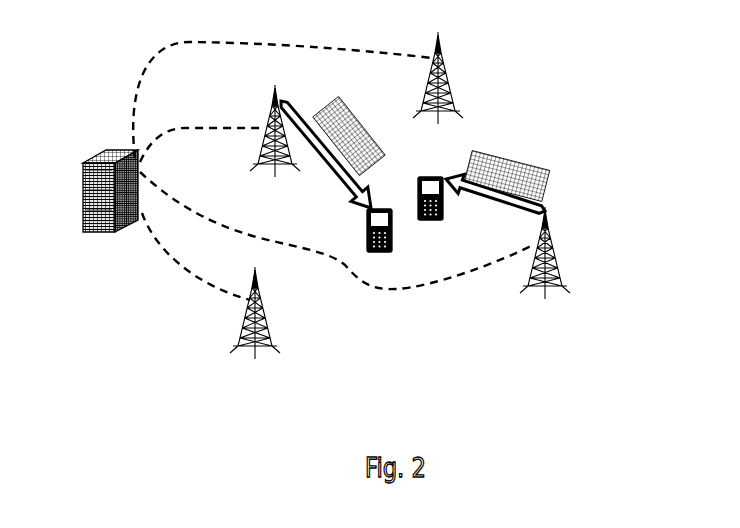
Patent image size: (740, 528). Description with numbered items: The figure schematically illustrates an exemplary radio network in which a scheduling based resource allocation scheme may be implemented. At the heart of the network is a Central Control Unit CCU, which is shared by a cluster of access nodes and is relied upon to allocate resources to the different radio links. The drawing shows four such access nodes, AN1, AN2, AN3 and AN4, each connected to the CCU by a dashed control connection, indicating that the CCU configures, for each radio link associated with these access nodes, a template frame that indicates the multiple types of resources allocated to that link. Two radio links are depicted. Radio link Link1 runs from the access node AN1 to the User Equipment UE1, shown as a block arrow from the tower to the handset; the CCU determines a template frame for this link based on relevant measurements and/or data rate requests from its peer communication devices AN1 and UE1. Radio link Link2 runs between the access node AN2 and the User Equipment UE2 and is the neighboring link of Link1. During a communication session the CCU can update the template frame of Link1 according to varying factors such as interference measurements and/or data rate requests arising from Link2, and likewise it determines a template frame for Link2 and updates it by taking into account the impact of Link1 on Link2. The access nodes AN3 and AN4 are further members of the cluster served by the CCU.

The Central Control Unit CCU is at (109, 181).
The access node 1 AN1 is at (265, 130).
The access node 2 AN2 is at (567, 253).
The access node 3 AN3 is at (448, 78).
The access node 4 AN4 is at (269, 313).
The User Equipment 1 UE1 is at (381, 242).
The User Equipment 2 UE2 is at (436, 211).
The radio link 1 Link1 is at (337, 147).
The radio link 2 Link2 is at (500, 177).